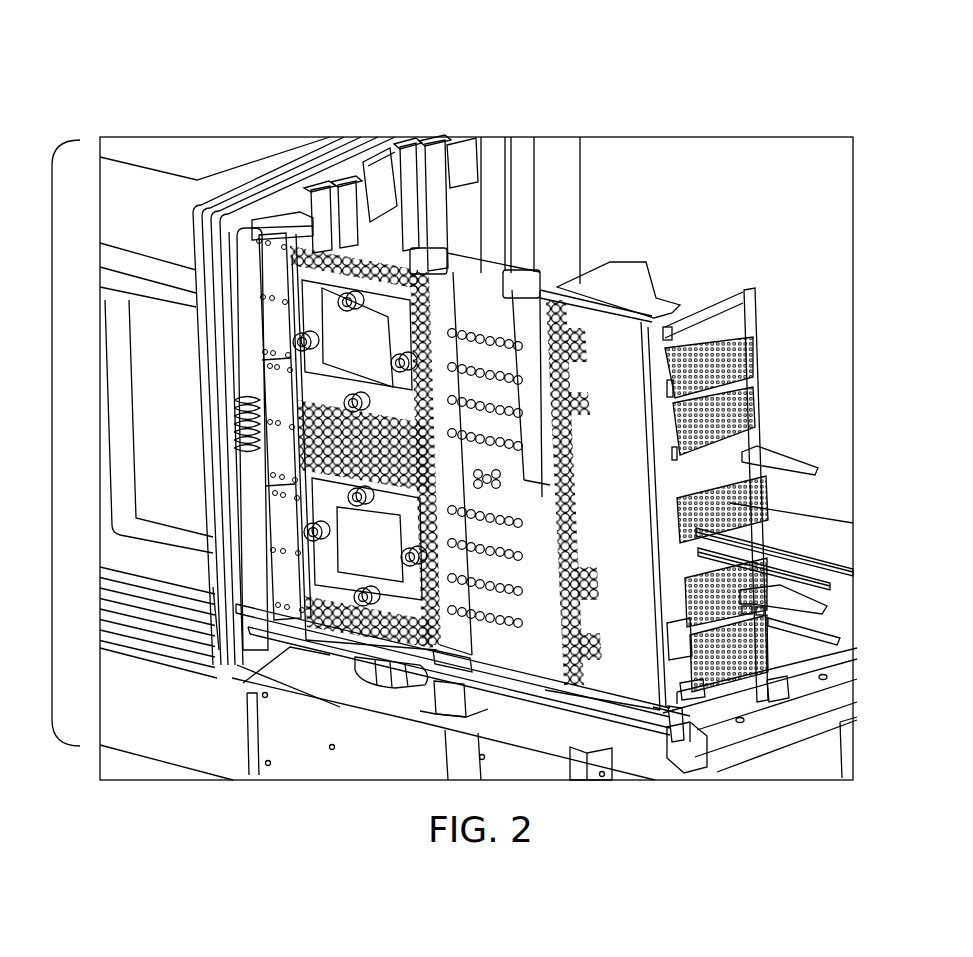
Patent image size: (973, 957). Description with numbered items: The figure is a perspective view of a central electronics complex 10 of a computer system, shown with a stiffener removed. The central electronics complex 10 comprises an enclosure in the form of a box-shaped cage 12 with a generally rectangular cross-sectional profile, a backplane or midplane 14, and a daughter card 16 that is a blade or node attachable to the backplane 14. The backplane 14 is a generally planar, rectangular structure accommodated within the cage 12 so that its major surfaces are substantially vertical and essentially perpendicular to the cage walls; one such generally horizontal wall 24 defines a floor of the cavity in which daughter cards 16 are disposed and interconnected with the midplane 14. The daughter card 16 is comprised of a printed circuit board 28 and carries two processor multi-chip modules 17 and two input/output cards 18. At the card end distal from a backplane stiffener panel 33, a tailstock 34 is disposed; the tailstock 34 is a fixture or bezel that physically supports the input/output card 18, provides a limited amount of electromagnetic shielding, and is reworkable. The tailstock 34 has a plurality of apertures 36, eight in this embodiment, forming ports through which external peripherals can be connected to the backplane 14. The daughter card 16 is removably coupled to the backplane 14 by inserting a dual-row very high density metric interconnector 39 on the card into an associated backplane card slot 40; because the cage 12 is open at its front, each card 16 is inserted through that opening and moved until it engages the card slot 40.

The central electronics complex 10 is at (52, 443).
The cage 12 is at (845, 700).
The backplane or midplane 14 is at (345, 145).
The daughter card 16 is at (487, 300).
The processor multi-chip module 17 is at (376, 357).
The input/output card 18 is at (745, 458).
The wall 24 is at (670, 733).
The printed circuit board 28 is at (632, 670).
The backplane stiffener panel 33 is at (203, 207).
The tailstock 34 is at (753, 320).
The apertures 36 is at (780, 587).
The very high density metric interconnector 39 is at (235, 228).
The backplane card slot 40 is at (413, 190).